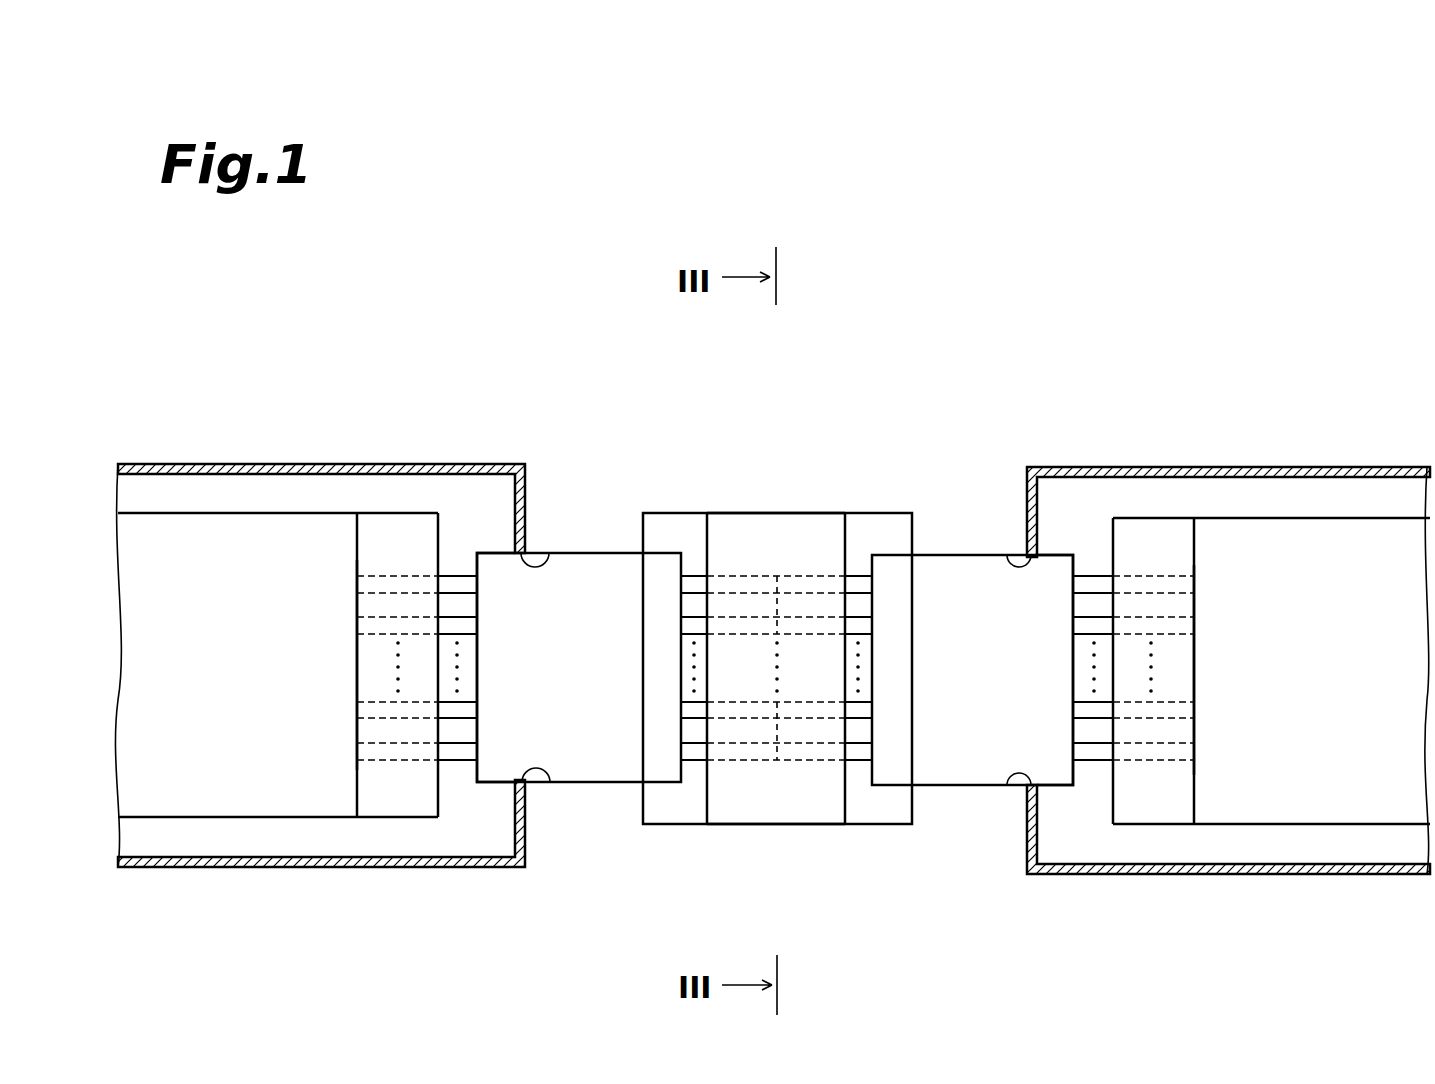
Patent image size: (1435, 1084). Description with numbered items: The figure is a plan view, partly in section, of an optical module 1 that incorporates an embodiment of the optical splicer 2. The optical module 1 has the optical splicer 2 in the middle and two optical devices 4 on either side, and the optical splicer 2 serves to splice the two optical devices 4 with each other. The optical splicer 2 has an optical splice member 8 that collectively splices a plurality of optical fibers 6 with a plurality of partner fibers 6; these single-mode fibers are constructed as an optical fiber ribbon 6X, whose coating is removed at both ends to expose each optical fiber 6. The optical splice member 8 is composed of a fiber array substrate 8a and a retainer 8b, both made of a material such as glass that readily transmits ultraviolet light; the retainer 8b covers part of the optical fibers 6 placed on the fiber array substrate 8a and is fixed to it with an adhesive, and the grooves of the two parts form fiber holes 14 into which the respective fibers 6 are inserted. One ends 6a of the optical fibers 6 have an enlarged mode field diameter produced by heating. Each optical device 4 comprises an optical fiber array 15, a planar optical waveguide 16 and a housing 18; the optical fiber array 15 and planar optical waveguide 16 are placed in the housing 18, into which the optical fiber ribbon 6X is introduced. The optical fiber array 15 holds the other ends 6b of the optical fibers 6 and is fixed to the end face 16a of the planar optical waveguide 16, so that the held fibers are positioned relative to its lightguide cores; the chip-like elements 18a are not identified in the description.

The optical module 1 is at (1187, 299).
The optical splicer 2 is at (858, 377).
The optical device 4 is at (275, 480).
The optical fiber 6 is at (694, 577).
The one end of optical fiber 6a is at (780, 577).
The other end of optical fiber 6b is at (387, 582).
The optical fiber ribbon 6X is at (613, 758).
The optical splice member 8 is at (850, 424).
The fiber array substrate 8a is at (700, 516).
The retainer 8b is at (771, 516).
The fiber hole 14 is at (824, 572).
The optical fiber array 15 is at (405, 795).
The planar optical waveguide 16 is at (240, 790).
The end face of planar optical waveguide 16a is at (358, 787).
The housing 18 is at (193, 868).
The semiconductor chip 18a is at (535, 553).